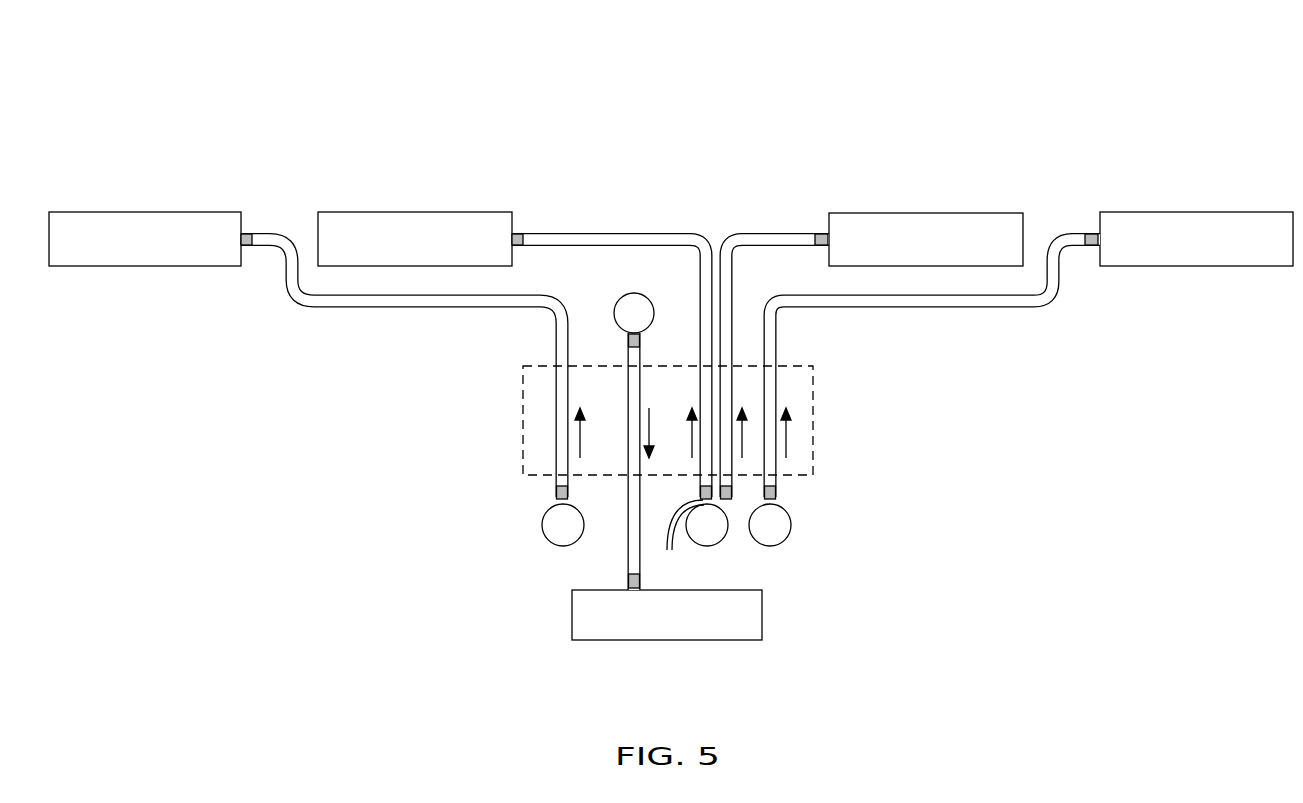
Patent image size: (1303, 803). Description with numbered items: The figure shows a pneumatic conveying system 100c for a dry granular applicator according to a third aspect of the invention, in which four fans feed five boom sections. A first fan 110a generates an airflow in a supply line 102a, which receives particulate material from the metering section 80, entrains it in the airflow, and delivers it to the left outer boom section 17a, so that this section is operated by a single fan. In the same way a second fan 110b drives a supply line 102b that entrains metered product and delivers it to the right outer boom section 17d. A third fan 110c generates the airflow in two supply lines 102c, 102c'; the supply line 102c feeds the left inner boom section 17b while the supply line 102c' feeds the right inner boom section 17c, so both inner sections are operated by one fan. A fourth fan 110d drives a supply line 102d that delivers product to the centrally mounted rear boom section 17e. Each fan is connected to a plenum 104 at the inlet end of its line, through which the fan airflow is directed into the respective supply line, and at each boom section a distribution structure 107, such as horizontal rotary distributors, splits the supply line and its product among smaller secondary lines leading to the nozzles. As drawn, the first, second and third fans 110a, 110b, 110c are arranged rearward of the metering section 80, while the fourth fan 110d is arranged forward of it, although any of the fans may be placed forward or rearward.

The pneumatic conveying system 100c is at (256, 75).
The left outer boom section 17a is at (137, 222).
The left inner boom section 17b is at (410, 222).
The right inner boom section 17c is at (930, 222).
The right outer boom section 17d is at (1200, 222).
The rear boom section 17e is at (665, 628).
The distribution structure 107 is at (246, 238).
The plenum 104 is at (641, 336).
The supply line 102a is at (417, 305).
The supply line 102b is at (935, 308).
The supply line 102c is at (609, 346).
The supply line 102c' is at (744, 329).
The supply line 102d is at (633, 412).
The first fan 110a is at (551, 531).
The second fan 110b is at (781, 536).
The third fan 110c is at (704, 541).
The fourth fan 110d is at (631, 301).
The metering section 80 is at (820, 394).